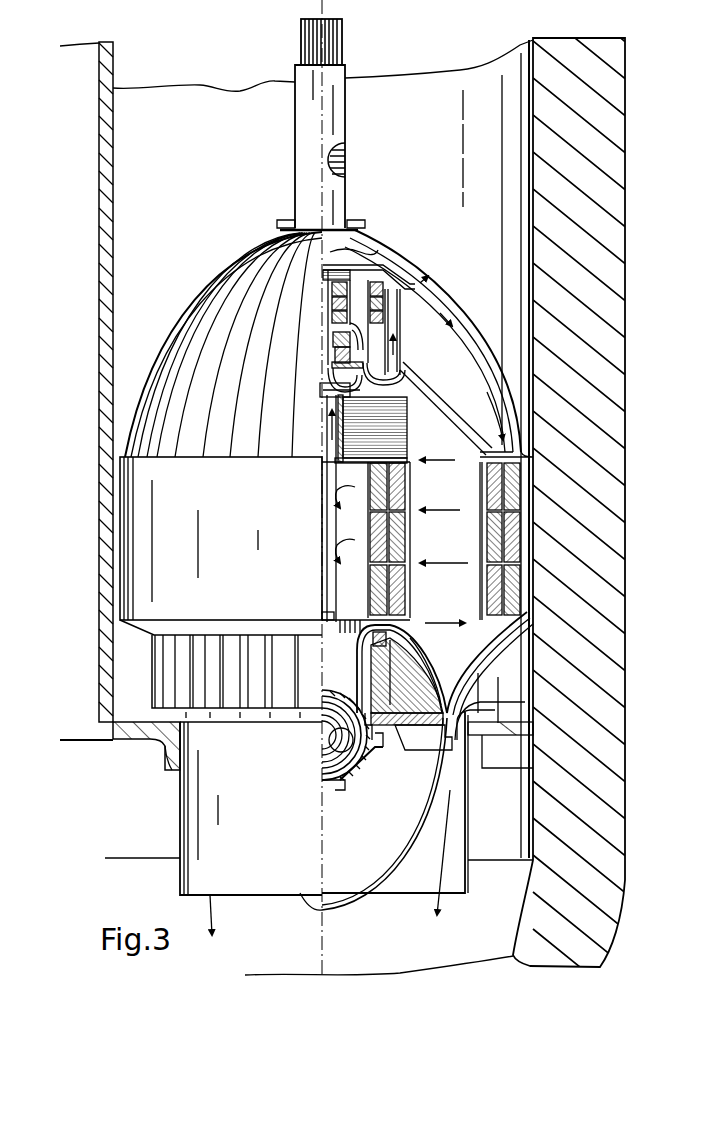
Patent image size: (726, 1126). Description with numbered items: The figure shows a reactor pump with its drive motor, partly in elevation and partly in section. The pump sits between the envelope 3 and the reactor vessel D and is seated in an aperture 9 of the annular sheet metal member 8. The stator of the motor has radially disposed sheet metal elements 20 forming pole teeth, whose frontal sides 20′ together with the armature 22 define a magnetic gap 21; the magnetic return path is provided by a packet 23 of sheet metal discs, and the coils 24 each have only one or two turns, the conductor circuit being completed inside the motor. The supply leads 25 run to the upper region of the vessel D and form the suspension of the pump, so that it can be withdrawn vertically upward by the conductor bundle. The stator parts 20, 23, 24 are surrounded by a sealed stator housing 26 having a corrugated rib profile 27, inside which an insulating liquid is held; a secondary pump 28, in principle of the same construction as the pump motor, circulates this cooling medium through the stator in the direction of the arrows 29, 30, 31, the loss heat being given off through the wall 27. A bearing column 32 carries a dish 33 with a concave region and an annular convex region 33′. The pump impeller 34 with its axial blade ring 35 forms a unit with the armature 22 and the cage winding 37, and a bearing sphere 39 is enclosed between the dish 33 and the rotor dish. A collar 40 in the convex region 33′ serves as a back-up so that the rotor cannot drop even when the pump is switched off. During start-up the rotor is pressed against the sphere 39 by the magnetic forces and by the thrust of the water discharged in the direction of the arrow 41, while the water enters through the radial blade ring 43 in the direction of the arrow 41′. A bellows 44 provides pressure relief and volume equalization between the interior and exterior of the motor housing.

The envelope 3 is at (99, 484).
The reactor vessel D is at (623, 313).
The annular sheet metal member 8 is at (135, 734).
The aperture 9 is at (177, 771).
The sheet metal elements 20 is at (435, 421).
The frontal sides 20′ is at (487, 677).
The magnetic gap 21 is at (430, 668).
The armature 22 is at (409, 702).
The packet of sheet metal discs 23 is at (408, 438).
The coils 24 is at (488, 538).
The supply leads 25 is at (332, 42).
The stator housing 26 is at (198, 301).
The corrugated rib profile 27 is at (198, 372).
The secondary pump 28 is at (360, 282).
The arrow 29 is at (446, 306).
The arrow 30 is at (340, 511).
The arrow 31 is at (325, 455).
The bearing column 32 is at (358, 666).
The dish 33 is at (327, 731).
The annular convex region 33′ is at (322, 749).
The pump impeller 34 is at (403, 735).
The axial blade ring 35 is at (470, 746).
The cage winding 37 is at (375, 626).
The bearing sphere 39 is at (350, 784).
The collar 40 is at (378, 748).
The arrow 41 is at (433, 906).
The arrow 41′ is at (478, 698).
The radial blade ring 43 is at (197, 686).
The bellows 44 is at (347, 163).